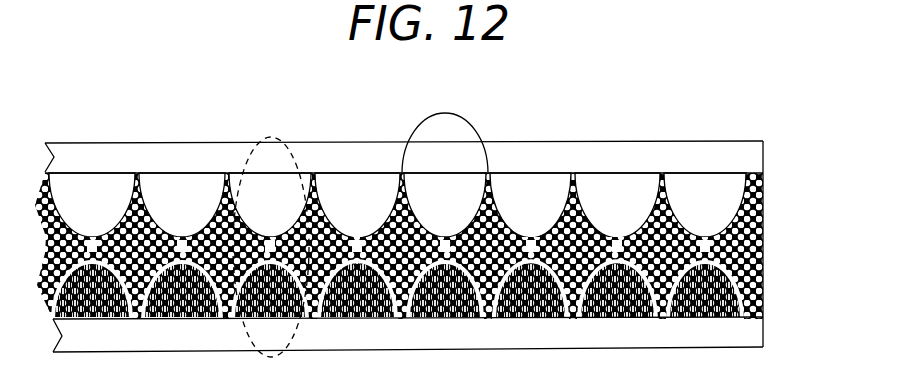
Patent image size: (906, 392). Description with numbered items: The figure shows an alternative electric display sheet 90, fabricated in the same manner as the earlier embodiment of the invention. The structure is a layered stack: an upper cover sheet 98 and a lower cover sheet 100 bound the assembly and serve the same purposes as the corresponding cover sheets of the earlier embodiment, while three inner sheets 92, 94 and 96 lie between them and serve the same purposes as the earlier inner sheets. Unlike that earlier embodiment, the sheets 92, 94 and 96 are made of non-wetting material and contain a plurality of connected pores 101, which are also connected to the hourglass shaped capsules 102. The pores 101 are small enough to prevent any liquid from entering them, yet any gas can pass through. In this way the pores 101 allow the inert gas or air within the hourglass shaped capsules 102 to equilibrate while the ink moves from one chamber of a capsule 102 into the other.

The electric display sheet 90 is at (648, 114).
The sheet 92 is at (764, 243).
The sheet 94 is at (764, 192).
The sheet 96 is at (764, 285).
The sheet 98 is at (764, 150).
The sheet 100 is at (764, 330).
The connected pores 101 is at (445, 133).
The hourglass shaped capsules 102 is at (266, 140).